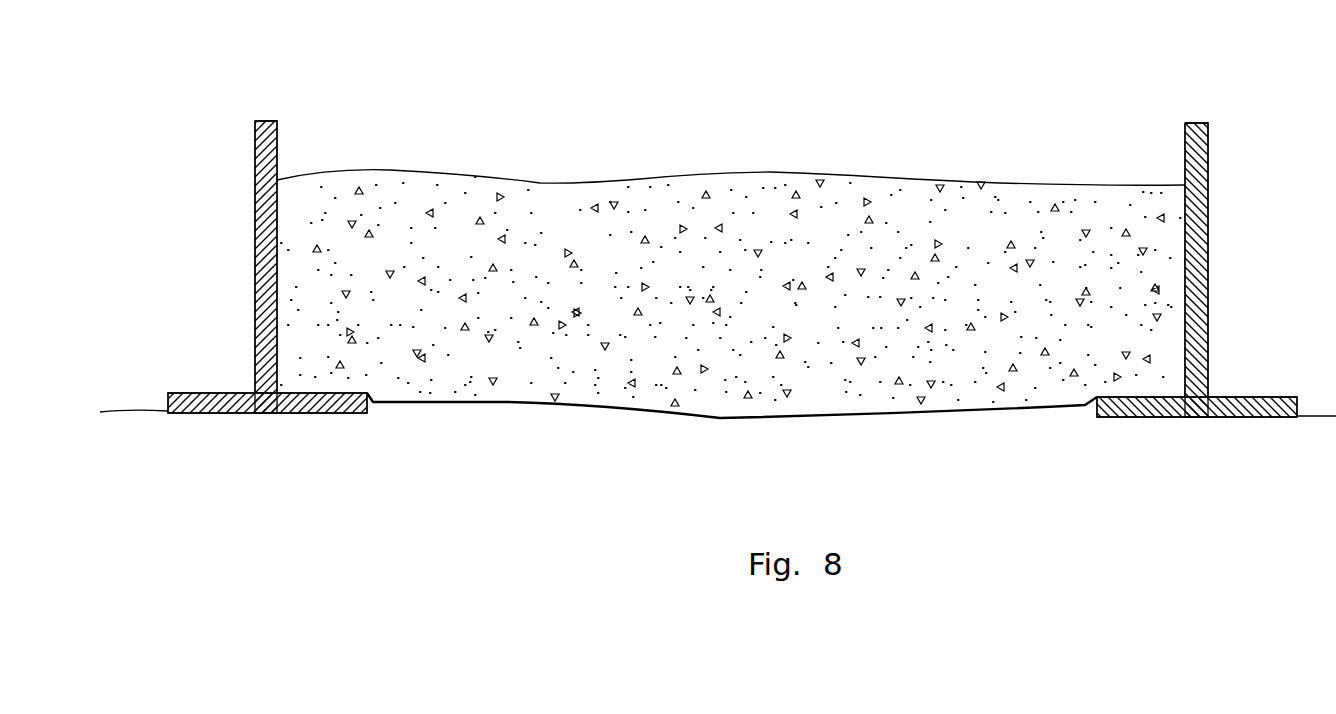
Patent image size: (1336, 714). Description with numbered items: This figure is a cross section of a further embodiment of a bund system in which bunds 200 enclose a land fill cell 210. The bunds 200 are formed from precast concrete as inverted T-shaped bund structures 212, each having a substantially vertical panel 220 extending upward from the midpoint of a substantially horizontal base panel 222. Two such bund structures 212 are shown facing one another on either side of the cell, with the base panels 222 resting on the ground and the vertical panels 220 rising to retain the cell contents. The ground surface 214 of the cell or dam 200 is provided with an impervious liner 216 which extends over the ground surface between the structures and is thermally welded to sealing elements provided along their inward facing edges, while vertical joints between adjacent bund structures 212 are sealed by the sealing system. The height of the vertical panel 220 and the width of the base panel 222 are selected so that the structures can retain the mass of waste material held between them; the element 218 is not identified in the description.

The bund 200 is at (318, 78).
The land fill cell 210 is at (755, 108).
The bund structure 212 is at (210, 163).
The ground surface 214 is at (732, 438).
The impervious liner 216 is at (798, 412).
The form side wall 218 is at (290, 151).
The substantially vertical panel 220 is at (257, 256).
The substantially horizontal base panel 222 is at (262, 432).